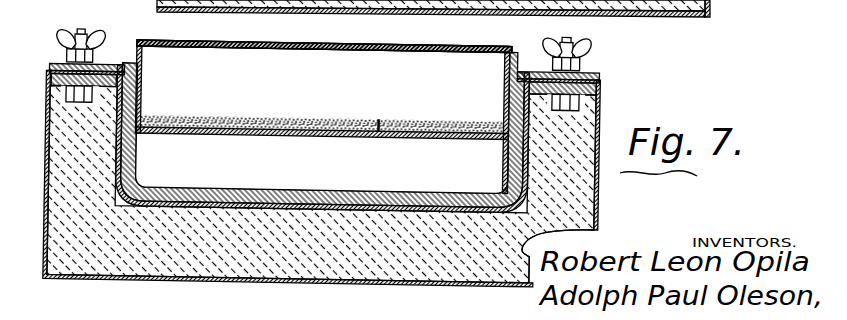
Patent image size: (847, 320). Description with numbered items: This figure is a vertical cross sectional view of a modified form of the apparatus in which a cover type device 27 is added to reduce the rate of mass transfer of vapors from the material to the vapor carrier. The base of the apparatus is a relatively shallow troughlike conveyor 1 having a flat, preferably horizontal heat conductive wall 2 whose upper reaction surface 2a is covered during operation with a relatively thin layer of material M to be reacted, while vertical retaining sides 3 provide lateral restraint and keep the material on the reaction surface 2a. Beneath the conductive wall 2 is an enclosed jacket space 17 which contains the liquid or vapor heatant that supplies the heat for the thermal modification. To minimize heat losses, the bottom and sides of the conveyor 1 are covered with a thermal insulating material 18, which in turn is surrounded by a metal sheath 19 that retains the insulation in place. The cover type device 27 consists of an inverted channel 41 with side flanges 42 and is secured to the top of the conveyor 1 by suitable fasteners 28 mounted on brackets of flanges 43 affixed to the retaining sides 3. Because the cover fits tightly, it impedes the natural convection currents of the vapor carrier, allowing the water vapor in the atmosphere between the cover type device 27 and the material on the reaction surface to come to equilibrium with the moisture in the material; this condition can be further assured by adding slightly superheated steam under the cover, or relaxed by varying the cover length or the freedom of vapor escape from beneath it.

The troughlike conveyor 1 is at (148, 82).
The heat conductive wall 2 is at (410, 136).
The reaction surface 2a is at (377, 130).
The retaining sides 3 is at (505, 91).
The enclosed jacket space 17 is at (267, 164).
The thermal insulating material 18 is at (561, 190).
The metal sheath 19 is at (598, 223).
The cover type device 27 is at (212, 41).
The fasteners 28 is at (97, 15).
The inverted channel 41 is at (433, 50).
The side flanges 42 is at (590, 71).
The brackets of flanges 43 is at (601, 84).
The material M is at (267, 116).